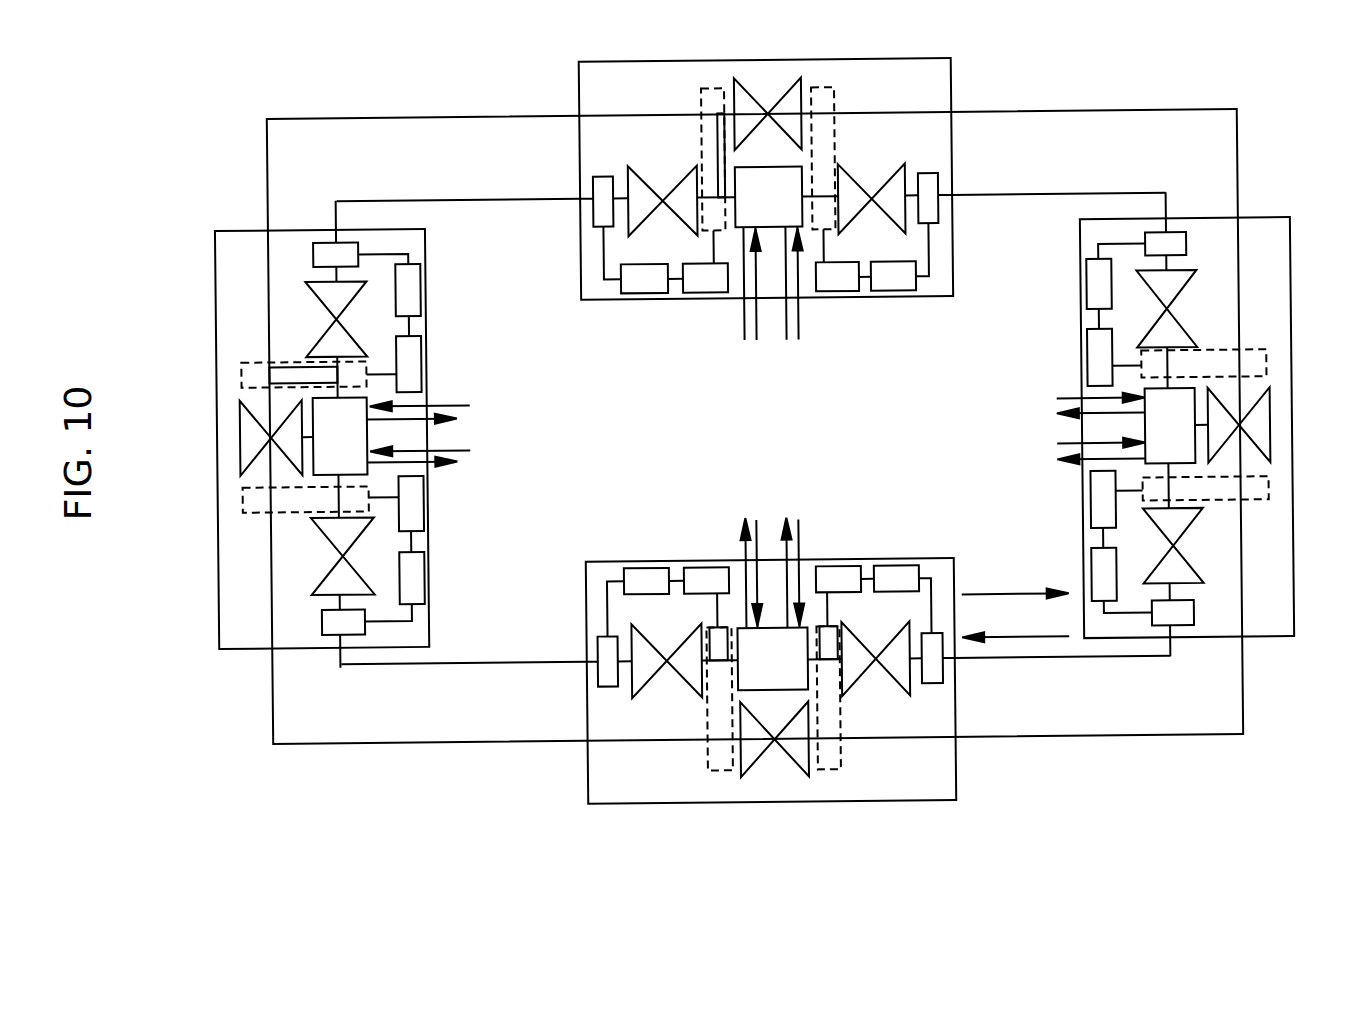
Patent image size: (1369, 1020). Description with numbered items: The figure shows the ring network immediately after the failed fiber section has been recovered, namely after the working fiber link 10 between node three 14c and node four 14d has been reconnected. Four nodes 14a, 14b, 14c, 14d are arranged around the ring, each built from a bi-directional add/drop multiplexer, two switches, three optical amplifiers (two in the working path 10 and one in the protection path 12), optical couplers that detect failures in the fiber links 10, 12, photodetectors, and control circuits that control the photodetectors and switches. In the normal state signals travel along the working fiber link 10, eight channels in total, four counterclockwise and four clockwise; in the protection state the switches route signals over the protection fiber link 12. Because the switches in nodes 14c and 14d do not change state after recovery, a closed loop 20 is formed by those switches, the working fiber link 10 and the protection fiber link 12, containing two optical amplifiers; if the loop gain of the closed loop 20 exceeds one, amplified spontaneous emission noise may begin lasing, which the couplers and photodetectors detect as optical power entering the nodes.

The working fiber link 10 is at (550, 660).
The protection fiber link 12 is at (1120, 739).
The node 14a is at (744, 802).
The node 14b is at (1292, 585).
The node 14c is at (583, 95).
The node 14d is at (238, 643).
The closed loop 20 is at (471, 114).